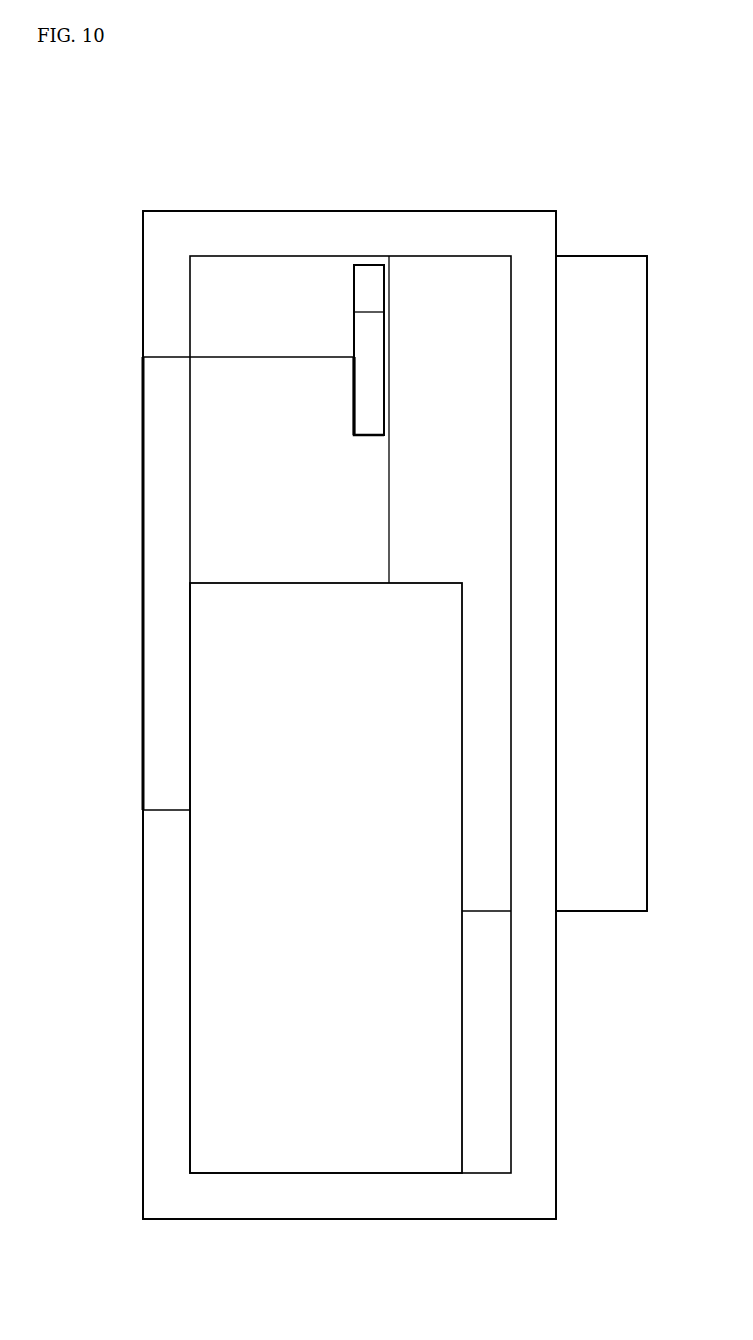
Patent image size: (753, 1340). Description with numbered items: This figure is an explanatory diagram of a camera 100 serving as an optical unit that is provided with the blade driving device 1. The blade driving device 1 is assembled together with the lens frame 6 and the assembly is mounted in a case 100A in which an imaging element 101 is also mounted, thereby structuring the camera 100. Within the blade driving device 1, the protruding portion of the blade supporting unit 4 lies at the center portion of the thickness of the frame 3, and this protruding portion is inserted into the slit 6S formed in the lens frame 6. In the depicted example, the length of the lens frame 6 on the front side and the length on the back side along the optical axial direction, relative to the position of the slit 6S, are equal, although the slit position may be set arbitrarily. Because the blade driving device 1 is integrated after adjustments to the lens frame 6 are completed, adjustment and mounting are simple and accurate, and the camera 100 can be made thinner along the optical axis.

The camera 100 is at (595, 181).
The case 100A is at (557, 1115).
The imaging element 101 is at (602, 911).
The blade driving device 1 is at (219, 1188).
The frame 3 is at (281, 1174).
The blade supporting unit 4 is at (370, 265).
The lens frame 6 is at (477, 256).
The slit 6S is at (355, 398).